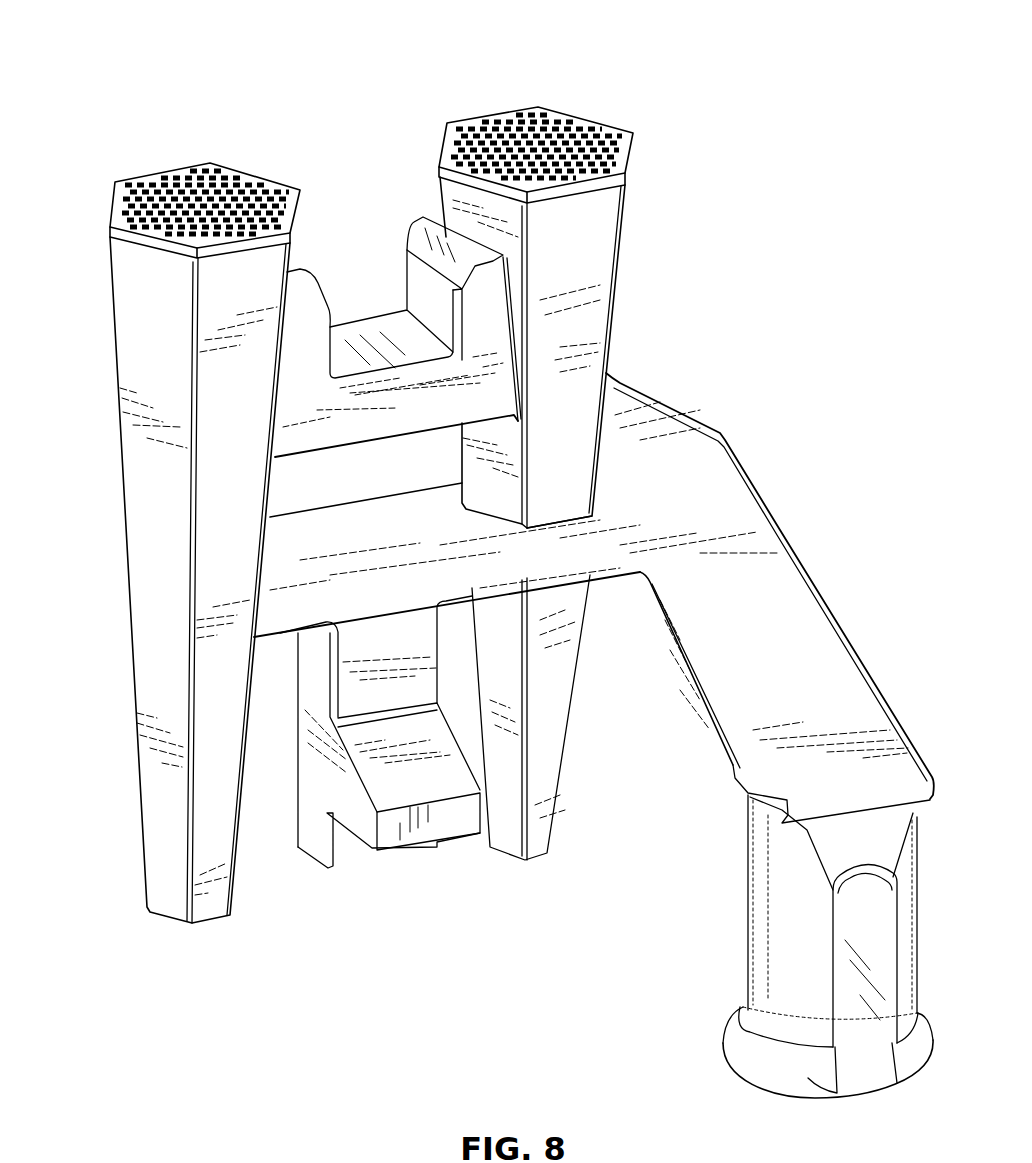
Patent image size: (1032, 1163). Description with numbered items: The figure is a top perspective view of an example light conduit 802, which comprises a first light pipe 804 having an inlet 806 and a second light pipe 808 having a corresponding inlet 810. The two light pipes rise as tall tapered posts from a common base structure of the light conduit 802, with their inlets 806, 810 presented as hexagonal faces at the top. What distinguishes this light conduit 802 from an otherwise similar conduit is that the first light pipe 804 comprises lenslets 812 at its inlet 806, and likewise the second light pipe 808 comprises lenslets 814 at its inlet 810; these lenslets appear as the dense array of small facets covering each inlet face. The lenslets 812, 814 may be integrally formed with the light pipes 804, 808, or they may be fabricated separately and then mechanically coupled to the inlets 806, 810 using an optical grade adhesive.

The light conduit 802 is at (606, 373).
The first light pipe 804 is at (135, 340).
The inlet 806 is at (113, 197).
The second light pipe 808 is at (593, 283).
The inlet 810 is at (632, 132).
The lenslets 812 is at (237, 173).
The lenslets 814 is at (568, 112).